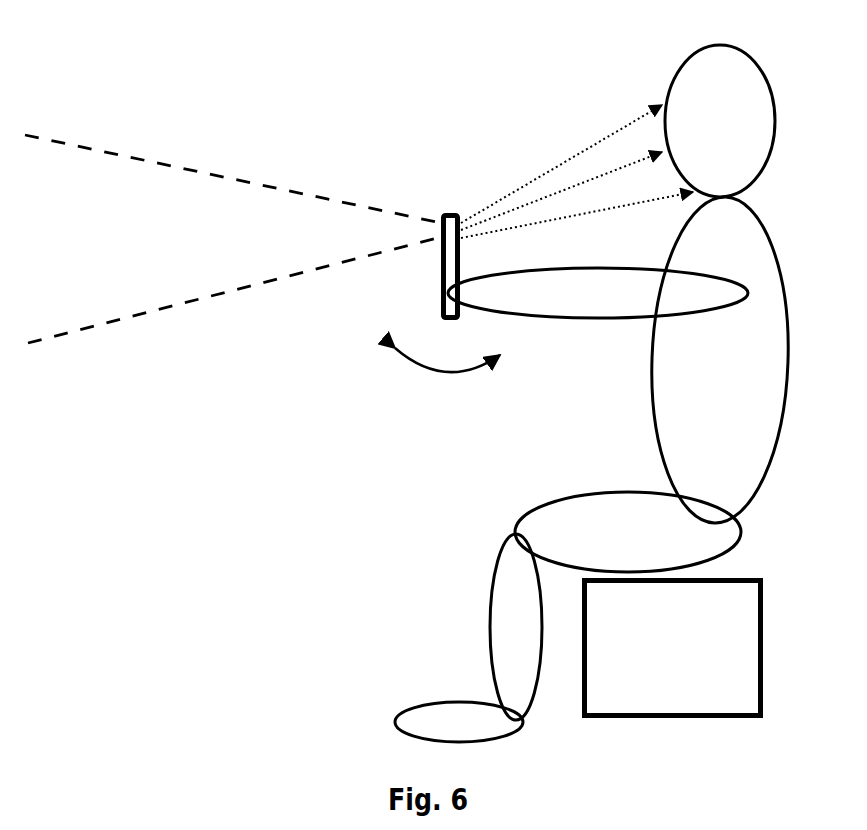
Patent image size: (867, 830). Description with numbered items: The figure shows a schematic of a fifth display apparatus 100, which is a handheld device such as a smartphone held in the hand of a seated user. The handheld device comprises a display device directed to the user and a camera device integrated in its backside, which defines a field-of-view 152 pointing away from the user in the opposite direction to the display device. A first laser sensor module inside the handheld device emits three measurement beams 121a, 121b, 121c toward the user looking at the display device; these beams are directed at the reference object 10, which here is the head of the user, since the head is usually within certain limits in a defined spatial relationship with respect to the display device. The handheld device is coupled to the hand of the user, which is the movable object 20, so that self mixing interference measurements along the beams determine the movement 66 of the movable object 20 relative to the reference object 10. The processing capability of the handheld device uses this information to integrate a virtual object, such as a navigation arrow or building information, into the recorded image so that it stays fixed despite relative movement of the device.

The reference object 10 is at (760, 63).
The movable object 20 is at (477, 295).
The movement 66 is at (447, 372).
The display apparatus 100 is at (441, 293).
The first measurement beam of first laser sensor module 121a is at (602, 140).
The second measurement beam of first laser sensor module 121b is at (517, 203).
The third measurement beam of first laser sensor module 121c is at (672, 200).
The field-of-view 152 is at (135, 160).